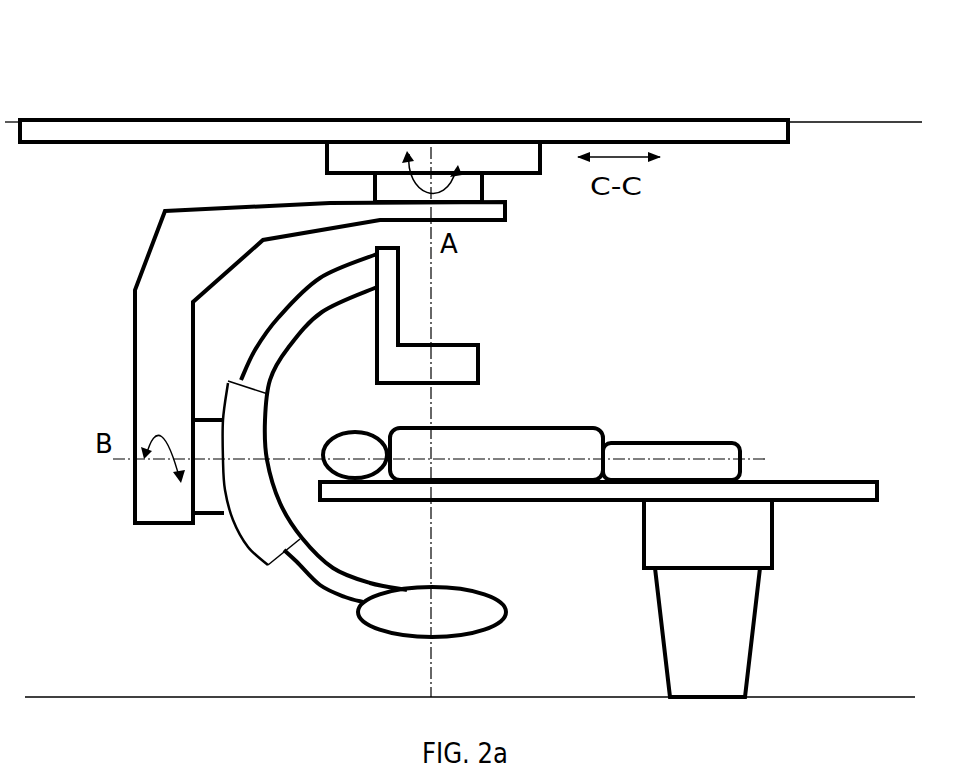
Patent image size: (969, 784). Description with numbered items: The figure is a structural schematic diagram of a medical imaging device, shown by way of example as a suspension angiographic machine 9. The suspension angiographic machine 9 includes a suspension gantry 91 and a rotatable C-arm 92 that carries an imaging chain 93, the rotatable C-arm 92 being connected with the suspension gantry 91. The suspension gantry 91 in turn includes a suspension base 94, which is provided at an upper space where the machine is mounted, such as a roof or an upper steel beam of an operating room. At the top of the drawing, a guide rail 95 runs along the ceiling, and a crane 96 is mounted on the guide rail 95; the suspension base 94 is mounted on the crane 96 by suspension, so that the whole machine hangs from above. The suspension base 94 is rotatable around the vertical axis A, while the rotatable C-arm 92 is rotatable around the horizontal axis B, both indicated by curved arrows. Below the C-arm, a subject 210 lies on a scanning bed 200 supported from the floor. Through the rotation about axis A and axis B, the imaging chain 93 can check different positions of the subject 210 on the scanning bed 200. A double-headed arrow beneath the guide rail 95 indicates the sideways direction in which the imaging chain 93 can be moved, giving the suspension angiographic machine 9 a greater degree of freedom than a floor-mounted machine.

The suspension angiographic machine 9 is at (238, 193).
The suspension gantry 91 is at (168, 311).
The rotatable C-arm 92 is at (322, 568).
The imaging chain 93 is at (448, 358).
The suspension base 94 is at (467, 187).
The guide rail 95 is at (695, 132).
The crane 96 is at (353, 157).
The scanning bed 200 is at (797, 482).
The subject 210 is at (551, 441).